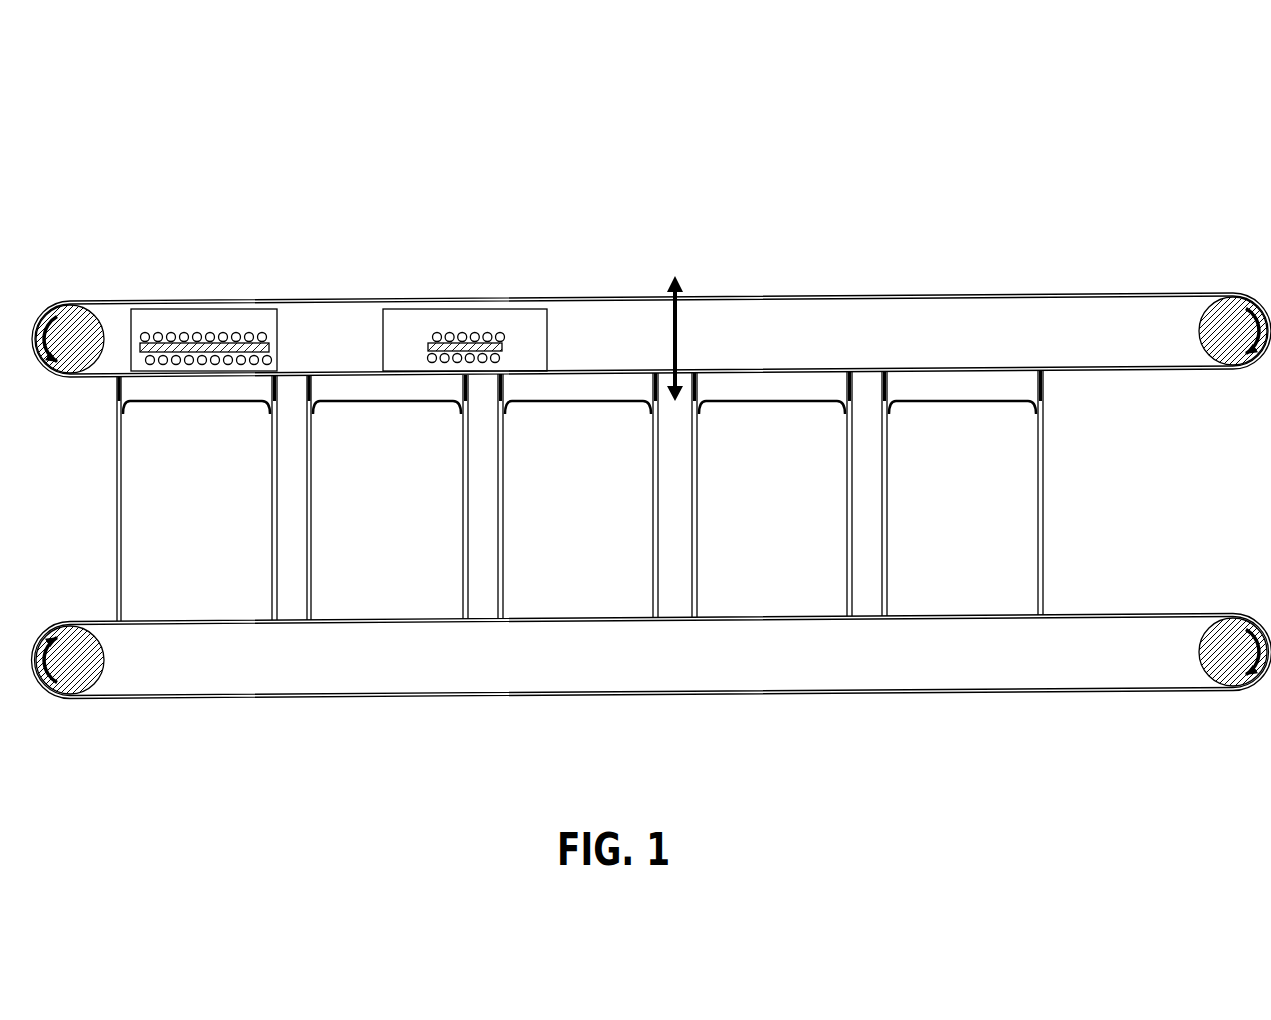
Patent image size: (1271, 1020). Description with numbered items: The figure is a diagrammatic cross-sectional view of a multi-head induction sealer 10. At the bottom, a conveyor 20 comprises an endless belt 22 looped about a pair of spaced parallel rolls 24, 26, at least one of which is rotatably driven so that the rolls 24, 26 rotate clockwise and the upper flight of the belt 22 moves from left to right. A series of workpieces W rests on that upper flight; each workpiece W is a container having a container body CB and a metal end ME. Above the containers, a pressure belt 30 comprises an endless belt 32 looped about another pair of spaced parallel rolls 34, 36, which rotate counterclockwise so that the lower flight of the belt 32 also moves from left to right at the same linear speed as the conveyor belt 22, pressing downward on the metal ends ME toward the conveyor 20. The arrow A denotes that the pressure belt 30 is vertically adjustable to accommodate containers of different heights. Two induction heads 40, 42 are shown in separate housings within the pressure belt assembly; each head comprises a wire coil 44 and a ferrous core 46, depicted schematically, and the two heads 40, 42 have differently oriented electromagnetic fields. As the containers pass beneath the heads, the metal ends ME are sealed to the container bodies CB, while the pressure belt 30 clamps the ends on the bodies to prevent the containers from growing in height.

The multi-head induction sealer 10 is at (635, 438).
The conveyor 20 is at (635, 679).
The endless belt 22 is at (892, 692).
The roll 24 is at (87, 665).
The roll 26 is at (1220, 637).
The pressure belt 30 is at (635, 288).
The endless belt 32 is at (822, 297).
The roll 34 is at (75, 325).
The roll 36 is at (1215, 325).
The induction head 40 is at (364, 300).
The induction head 42 is at (450, 315).
The wire coil 44 is at (255, 338).
The ferrous core 46 is at (270, 347).
The arrow A is at (685, 341).
The metal end ME is at (975, 397).
The workpiece W is at (605, 467).
The container body CB is at (1040, 485).